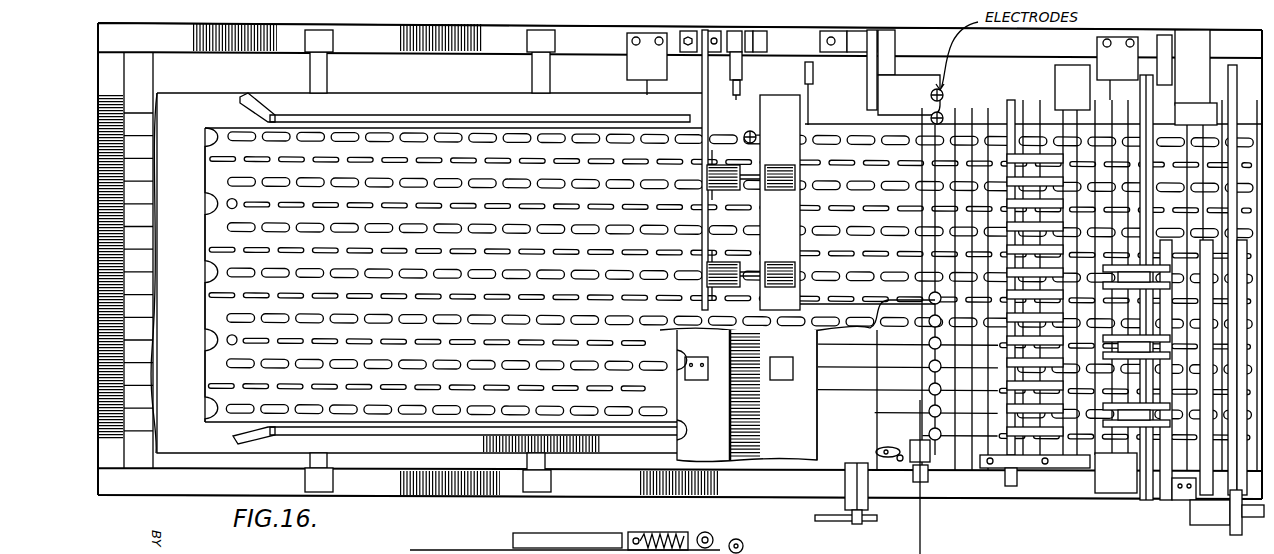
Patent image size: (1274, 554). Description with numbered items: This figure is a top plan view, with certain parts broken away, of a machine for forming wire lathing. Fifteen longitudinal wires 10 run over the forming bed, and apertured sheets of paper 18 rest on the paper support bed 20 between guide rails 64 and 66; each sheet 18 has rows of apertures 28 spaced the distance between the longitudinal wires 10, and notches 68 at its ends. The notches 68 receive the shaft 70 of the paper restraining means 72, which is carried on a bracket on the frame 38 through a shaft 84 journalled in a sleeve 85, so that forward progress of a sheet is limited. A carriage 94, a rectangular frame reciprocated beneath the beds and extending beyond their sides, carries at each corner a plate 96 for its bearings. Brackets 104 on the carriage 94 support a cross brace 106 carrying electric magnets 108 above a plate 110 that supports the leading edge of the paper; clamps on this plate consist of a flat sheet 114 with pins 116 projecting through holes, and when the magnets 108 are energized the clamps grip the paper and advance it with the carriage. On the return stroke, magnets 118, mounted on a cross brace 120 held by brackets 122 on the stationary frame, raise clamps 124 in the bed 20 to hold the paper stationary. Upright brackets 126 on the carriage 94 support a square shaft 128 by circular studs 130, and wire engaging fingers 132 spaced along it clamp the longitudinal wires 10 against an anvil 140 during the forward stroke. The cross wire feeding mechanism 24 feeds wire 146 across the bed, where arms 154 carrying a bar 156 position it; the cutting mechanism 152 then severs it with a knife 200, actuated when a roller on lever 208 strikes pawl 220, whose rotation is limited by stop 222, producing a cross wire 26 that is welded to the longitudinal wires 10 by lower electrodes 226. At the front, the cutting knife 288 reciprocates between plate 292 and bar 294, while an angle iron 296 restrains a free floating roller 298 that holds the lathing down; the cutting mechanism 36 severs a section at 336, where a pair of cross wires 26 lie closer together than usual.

The longitudinal wires 10 is at (142, 122).
The sheet of paper 18 is at (215, 426).
The paper support bed 20 is at (447, 462).
The cross wire feeding mechanism 24 is at (944, 535).
The cross wire 26 is at (962, 110).
The apertures 28 is at (255, 203).
The cutting mechanism 36 is at (1186, 540).
The frame 38 is at (424, 26).
The guide rail 64 is at (330, 106).
The guide rail 66 is at (366, 436).
The notches 68 is at (210, 205).
The shaft 70 is at (756, 137).
The paper restraining means 72 is at (747, 24).
The shaft 84 is at (740, 90).
The sleeve 85 is at (738, 74).
The carriage 94 is at (1005, 99).
The plate 96 is at (627, 68).
The bracket 104 is at (810, 65).
The cross brace 106 is at (806, 128).
The electric magnets 108 is at (780, 176).
The plate 110 is at (747, 396).
The flat sheet 114 is at (790, 400).
The pins 116 is at (775, 381).
The magnets 118 is at (708, 177).
The cross brace 120 is at (702, 106).
The brackets 122 is at (686, 31).
The clamps 124 is at (700, 381).
The upright bracket 126 is at (960, 476).
The square shaft 128 is at (1035, 455).
The circular stud 130 is at (1010, 468).
The wire engaging fingers 132 is at (1060, 120).
The anvil 140 is at (1075, 457).
The wire 146 is at (920, 531).
The cutting mechanism 152 is at (932, 478).
The arms 154 is at (820, 523).
The bar 156 is at (862, 488).
The knife 200 is at (894, 441).
The lever 208 is at (775, 545).
The pawl 220 is at (724, 529).
The stop 222 is at (686, 531).
The lower electrodes 226 is at (928, 400).
The cutting knife 288 is at (1236, 75).
The plate 292 is at (1256, 530).
The bar 294 is at (1213, 526).
The angle iron 296 is at (1180, 496).
The free floating roller 298 is at (1116, 473).
The closely spaced cross wires 336 is at (1165, 100).